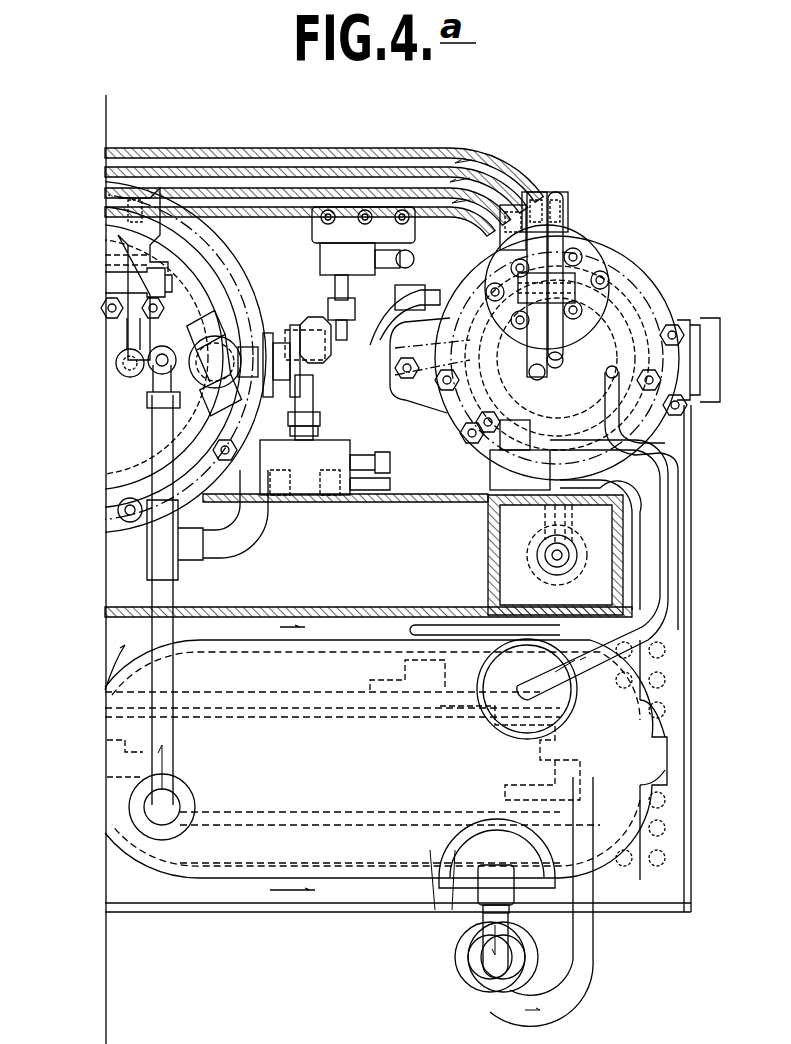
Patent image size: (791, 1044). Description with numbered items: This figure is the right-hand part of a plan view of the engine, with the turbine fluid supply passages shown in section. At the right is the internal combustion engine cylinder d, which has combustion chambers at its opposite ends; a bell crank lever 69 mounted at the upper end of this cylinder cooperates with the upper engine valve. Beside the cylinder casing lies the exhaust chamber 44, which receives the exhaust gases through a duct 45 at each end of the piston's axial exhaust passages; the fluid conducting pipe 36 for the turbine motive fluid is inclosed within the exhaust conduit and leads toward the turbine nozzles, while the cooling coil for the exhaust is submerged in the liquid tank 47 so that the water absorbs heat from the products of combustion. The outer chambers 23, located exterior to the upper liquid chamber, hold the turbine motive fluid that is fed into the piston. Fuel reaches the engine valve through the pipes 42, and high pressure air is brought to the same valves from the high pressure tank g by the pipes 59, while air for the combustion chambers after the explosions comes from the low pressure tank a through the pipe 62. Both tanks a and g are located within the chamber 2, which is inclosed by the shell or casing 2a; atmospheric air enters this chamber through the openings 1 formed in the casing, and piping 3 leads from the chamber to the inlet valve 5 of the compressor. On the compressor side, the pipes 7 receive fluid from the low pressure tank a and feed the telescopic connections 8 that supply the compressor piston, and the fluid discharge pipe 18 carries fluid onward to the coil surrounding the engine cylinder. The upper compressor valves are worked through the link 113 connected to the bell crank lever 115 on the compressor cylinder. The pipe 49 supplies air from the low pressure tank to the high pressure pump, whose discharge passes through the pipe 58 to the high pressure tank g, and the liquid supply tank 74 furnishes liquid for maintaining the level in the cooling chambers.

The openings 1 is at (665, 654).
The chamber 2 is at (675, 484).
The shell or casing 2a is at (340, 588).
The piping 3 is at (190, 592).
The inlet valve 5 is at (146, 364).
The pipes 7 is at (355, 468).
The telescopic connections 8 is at (293, 438).
The fluid discharge pipe 18 is at (395, 290).
The outer chambers 23 is at (430, 395).
The fluid conducting pipe 36 is at (406, 188).
The pipes 42 is at (672, 462).
The chamber 44 is at (605, 530).
The duct 45 is at (325, 160).
The liquid tank 47 is at (495, 163).
The pipe 49 is at (490, 922).
The pipe 58 is at (585, 962).
The pipes 59 is at (422, 628).
The pipe 62 is at (505, 460).
The bell crank lever 69 is at (560, 252).
The liquid supply tank 74 is at (368, 555).
The link 113 is at (140, 200).
The bell crank lever 115 is at (118, 265).
The low pressure tank a is at (348, 880).
The cylinder d is at (605, 315).
The high pressure tank g is at (386, 757).